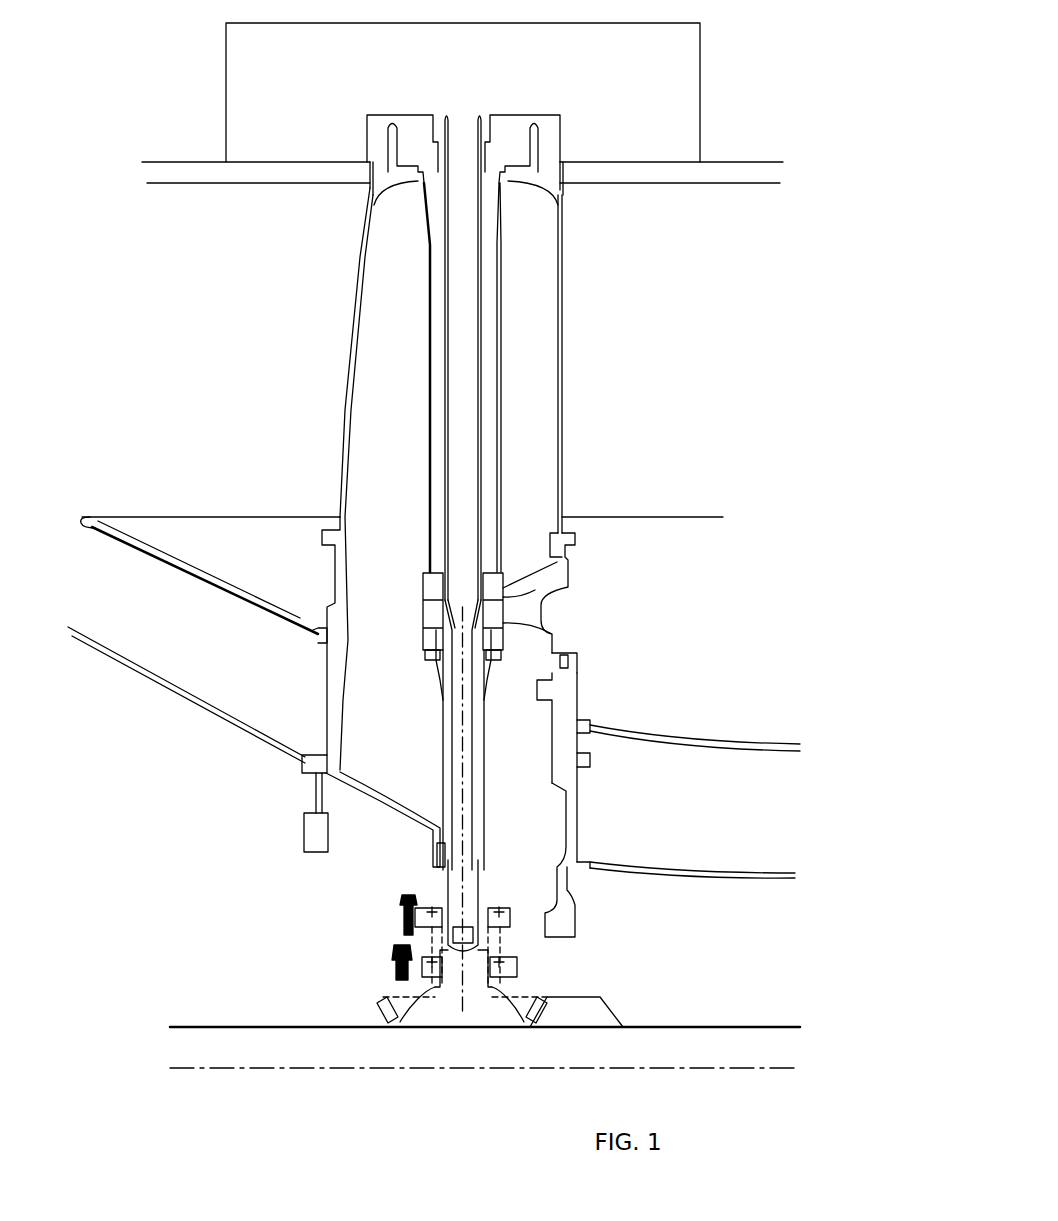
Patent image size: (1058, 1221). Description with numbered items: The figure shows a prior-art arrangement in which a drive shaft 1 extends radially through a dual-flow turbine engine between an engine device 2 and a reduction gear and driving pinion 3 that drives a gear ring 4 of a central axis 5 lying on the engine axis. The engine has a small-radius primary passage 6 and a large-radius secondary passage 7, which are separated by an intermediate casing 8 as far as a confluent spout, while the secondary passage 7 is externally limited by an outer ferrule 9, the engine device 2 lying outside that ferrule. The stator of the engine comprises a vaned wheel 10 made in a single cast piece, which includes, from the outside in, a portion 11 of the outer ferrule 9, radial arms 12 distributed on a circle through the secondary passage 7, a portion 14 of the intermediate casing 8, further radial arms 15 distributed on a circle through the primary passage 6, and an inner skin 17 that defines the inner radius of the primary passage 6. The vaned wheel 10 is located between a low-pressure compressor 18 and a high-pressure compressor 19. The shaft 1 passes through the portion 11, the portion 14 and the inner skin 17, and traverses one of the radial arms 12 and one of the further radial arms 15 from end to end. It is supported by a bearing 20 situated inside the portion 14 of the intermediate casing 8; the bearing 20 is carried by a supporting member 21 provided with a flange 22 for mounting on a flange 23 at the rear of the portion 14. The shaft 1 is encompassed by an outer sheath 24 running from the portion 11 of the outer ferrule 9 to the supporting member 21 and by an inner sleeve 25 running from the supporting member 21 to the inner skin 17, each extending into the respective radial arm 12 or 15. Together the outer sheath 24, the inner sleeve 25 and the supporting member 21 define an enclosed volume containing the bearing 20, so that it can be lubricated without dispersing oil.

The drive shaft 1 is at (481, 318).
The engine device 2 is at (463, 92).
The reduction gear and driving pinion 3 is at (527, 997).
The gear ring 4 is at (598, 1012).
The central axis 5 is at (712, 1026).
The primary passage 6 is at (706, 810).
The secondary passage 7 is at (659, 393).
The intermediate casing 8 is at (722, 593).
The outer ferrule 9 is at (720, 160).
The vaned wheel 10 is at (275, 387).
The portion of the outer ferrule 11 is at (382, 176).
The radial arms 12 is at (562, 340).
The portion of the intermediate casing 14 is at (336, 577).
The further radial arms 15 is at (577, 757).
The inner skin 17 is at (378, 805).
The low-pressure compressor 18 is at (233, 723).
The high-pressure compressor 19 is at (677, 873).
The bearing 20 is at (503, 568).
The supporting member 21 is at (527, 598).
The flange 22 is at (562, 640).
The flange 23 is at (577, 697).
The outer sheath 24 is at (427, 420).
The inner sleeve 25 is at (440, 752).